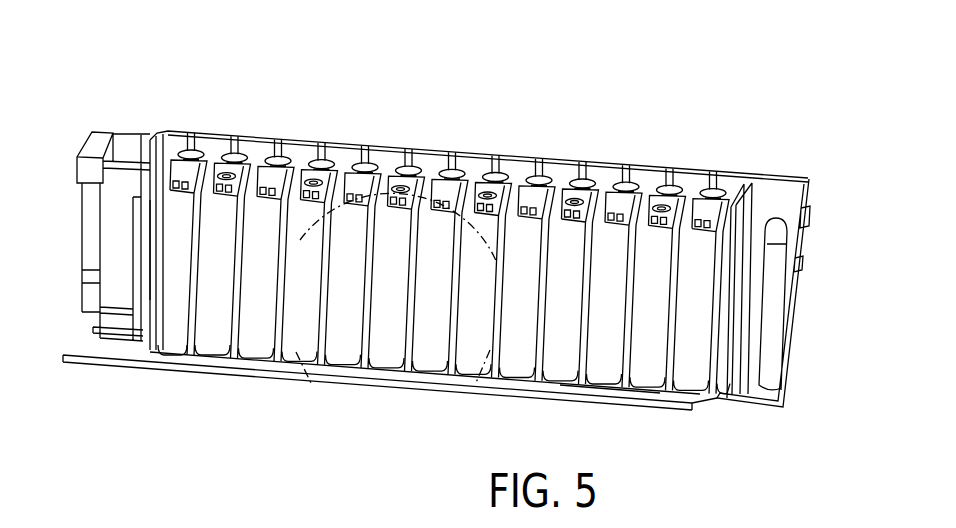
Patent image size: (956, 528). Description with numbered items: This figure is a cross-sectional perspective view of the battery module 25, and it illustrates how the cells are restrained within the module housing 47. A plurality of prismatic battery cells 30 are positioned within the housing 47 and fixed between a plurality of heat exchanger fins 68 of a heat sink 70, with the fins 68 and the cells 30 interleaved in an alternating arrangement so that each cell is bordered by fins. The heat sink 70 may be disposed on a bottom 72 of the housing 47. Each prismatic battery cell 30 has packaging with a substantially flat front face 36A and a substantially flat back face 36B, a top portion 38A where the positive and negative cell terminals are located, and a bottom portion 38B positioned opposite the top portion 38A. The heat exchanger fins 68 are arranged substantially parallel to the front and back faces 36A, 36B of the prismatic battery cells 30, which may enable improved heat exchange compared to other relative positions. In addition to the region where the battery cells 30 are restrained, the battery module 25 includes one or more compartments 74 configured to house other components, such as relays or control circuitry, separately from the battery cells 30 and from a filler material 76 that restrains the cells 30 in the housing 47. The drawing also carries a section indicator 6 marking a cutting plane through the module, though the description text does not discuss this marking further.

The battery module 25 is at (497, 50).
The prismatic battery cell 30 is at (273, 183).
The filler material 76 is at (208, 152).
The front face 36A is at (565, 162).
The back face 36B is at (531, 187).
The module housing 47 is at (617, 163).
The top portion 38A is at (630, 212).
The bottom portion 38B is at (604, 381).
The compartment 74 is at (775, 201).
The heat exchanger fin 68 is at (187, 318).
The heat sink 70 is at (220, 357).
The bottom 72 is at (633, 394).
The section line 6- 6 is at (312, 385).